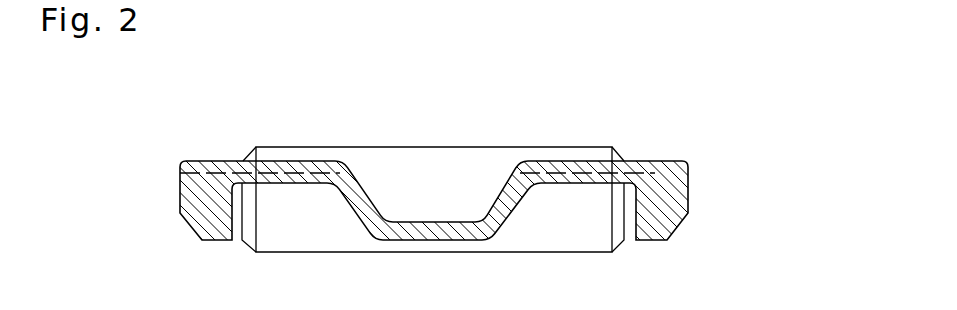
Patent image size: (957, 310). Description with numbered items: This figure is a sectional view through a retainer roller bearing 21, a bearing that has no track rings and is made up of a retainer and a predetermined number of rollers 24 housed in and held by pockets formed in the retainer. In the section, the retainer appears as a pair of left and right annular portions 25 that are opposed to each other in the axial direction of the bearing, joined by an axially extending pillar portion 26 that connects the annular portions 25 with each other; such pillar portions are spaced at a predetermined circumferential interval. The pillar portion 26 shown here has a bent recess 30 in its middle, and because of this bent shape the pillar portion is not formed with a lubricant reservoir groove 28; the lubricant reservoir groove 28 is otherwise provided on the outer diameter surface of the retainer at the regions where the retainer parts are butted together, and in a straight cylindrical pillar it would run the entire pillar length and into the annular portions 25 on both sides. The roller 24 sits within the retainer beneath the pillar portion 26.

The retainer roller bearing 21 is at (655, 153).
The roller 24 is at (482, 168).
The annular portion 25 is at (195, 204).
The pillar portion 26 is at (572, 167).
The lubricant reservoir groove 28 is at (206, 172).
The bent recess 30 is at (414, 226).